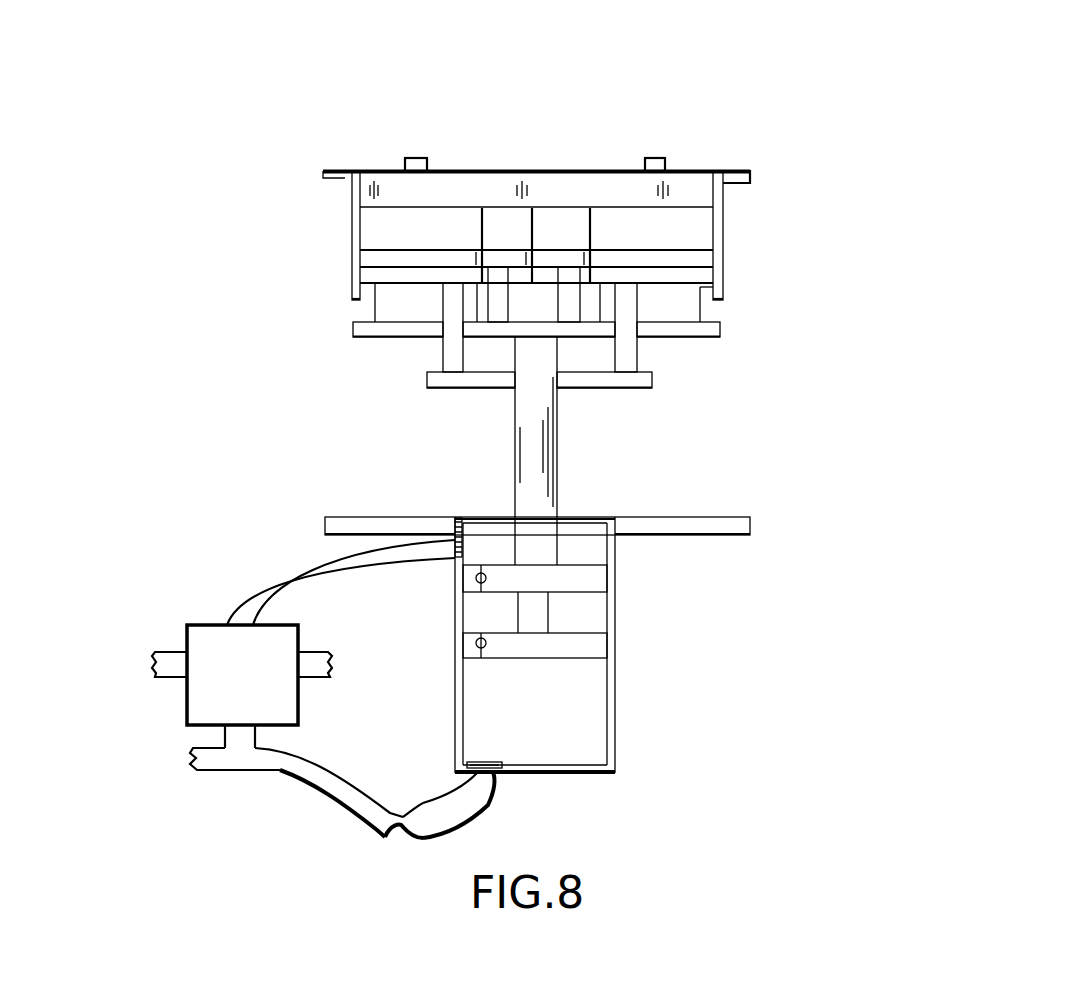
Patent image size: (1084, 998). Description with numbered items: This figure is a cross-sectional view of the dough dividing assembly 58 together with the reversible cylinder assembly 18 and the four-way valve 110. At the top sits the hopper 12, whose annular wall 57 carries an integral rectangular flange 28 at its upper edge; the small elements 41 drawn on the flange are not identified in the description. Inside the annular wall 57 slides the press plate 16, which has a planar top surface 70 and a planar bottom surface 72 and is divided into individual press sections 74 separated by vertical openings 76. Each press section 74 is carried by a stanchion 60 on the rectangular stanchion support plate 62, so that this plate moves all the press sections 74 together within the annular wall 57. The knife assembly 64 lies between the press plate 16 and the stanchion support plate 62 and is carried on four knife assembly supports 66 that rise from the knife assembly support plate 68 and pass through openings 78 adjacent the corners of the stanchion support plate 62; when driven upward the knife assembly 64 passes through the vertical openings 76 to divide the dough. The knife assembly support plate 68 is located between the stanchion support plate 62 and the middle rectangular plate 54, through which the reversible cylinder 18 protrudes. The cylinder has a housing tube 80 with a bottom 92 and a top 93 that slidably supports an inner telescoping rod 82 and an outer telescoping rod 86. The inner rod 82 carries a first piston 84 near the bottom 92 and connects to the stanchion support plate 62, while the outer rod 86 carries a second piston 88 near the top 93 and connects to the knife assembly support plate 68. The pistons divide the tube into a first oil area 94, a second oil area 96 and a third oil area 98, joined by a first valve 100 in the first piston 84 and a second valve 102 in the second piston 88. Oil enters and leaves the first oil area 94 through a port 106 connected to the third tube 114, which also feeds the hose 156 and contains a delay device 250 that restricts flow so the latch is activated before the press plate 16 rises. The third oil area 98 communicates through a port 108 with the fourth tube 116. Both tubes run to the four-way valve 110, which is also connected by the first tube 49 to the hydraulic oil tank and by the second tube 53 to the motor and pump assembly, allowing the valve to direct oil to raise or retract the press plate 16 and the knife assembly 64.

The hopper 12 is at (757, 210).
The press plate 16 is at (404, 234).
The reversible cylinder assembly 18 is at (760, 628).
The rectangular flange 28 is at (742, 170).
The fastener 41 is at (412, 158).
The first tube 49 is at (160, 652).
The second tube 53 is at (310, 652).
The middle rectangular plate 54 is at (727, 517).
The annular wall 57 is at (352, 220).
The dough dividing assembly 58 is at (846, 315).
The stanchions 60 is at (392, 302).
The stanchion support plate 62 is at (713, 338).
The knife assembly 64 is at (700, 184).
The knife assembly supports 66 is at (443, 357).
The knife assembly support plate 68 is at (487, 385).
The planar top surface 70 is at (653, 260).
The planar bottom surface 72 is at (410, 265).
The individual press sections 74 is at (452, 258).
The vertical openings 76 is at (470, 252).
The openings 78 is at (660, 337).
The housing tube 80 is at (613, 730).
The inner telescoping rod 82 is at (547, 612).
The first piston 84 is at (470, 655).
The outer telescoping rod 86 is at (545, 487).
The second piston 88 is at (597, 573).
The bottom of the housing tube 92 is at (577, 773).
The top of the housing tube 93 is at (597, 510).
The first oil area 94 is at (548, 722).
The second oil area 96 is at (507, 628).
The third oil area 98 is at (505, 560).
The first valve 100 is at (476, 643).
The second valve 102 is at (476, 578).
The port 106 is at (496, 775).
The port 108 is at (470, 547).
The four-way valve 110 is at (210, 625).
The third tube 114 is at (330, 793).
The fourth tube 116 is at (290, 574).
The hose 156 is at (208, 757).
The delay device 250 is at (399, 845).